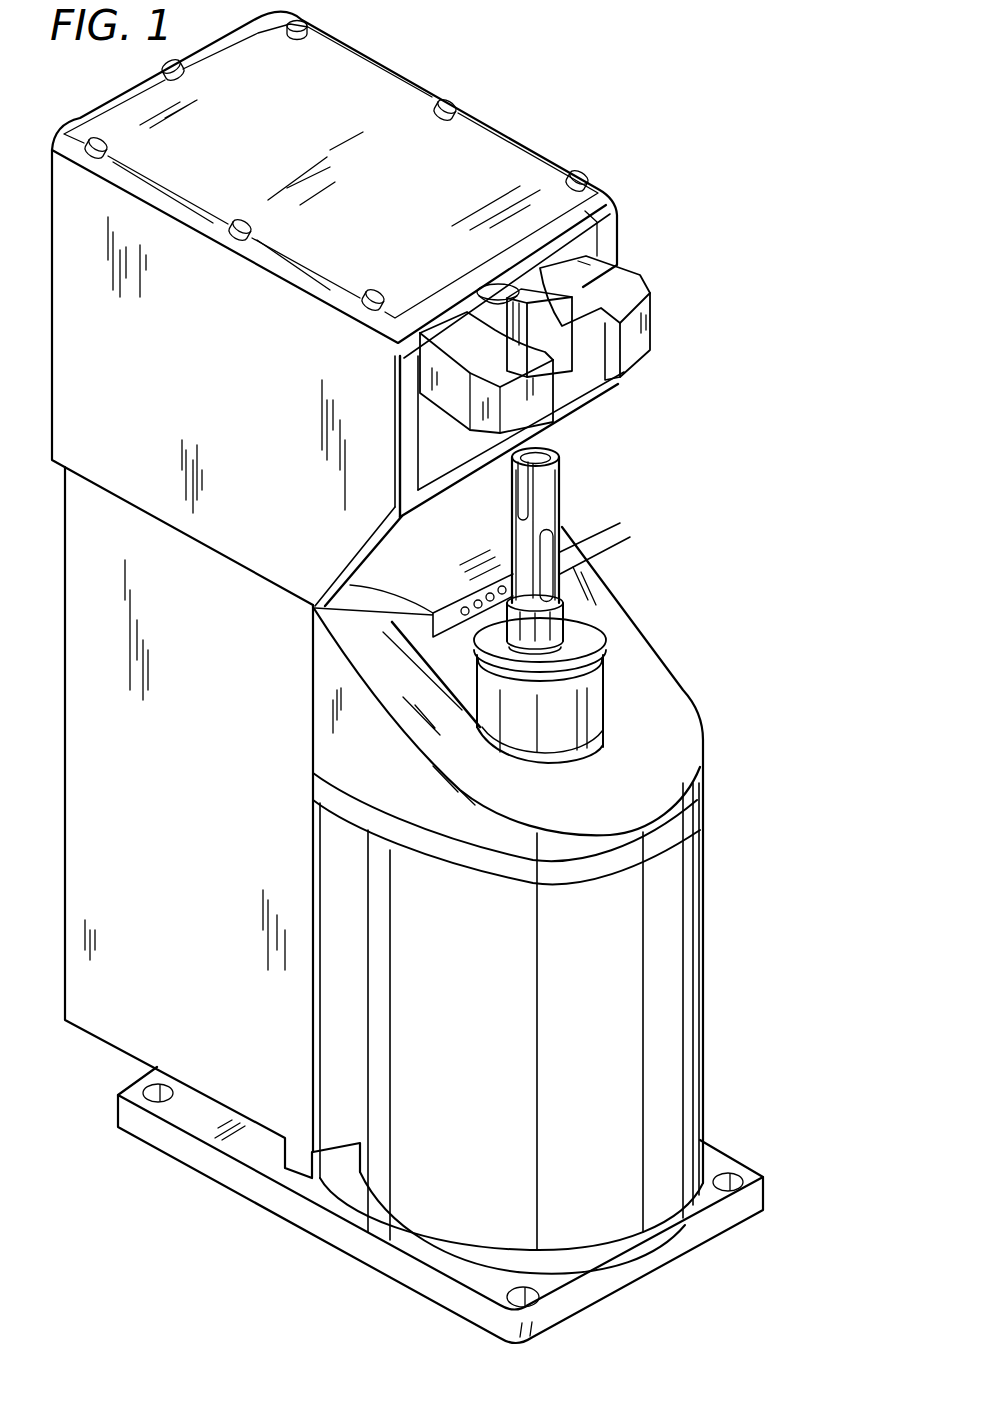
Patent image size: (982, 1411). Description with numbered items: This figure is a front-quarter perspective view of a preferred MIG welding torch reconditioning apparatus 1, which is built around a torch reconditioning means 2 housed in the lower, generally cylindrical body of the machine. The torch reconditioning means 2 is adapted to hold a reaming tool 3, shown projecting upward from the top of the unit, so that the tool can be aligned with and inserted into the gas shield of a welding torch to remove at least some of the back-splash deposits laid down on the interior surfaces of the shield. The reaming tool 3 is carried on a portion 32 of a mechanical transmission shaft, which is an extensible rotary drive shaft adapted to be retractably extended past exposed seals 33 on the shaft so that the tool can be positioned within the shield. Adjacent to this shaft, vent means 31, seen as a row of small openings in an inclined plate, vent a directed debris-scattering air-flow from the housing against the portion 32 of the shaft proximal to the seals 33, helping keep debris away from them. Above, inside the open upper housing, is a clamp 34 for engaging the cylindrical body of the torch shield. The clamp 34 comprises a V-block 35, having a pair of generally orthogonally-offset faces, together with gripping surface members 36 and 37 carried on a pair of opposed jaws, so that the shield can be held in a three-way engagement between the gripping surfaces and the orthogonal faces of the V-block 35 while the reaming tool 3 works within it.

The MIG welding torch reconditioning apparatus 1 is at (770, 262).
The torch reconditioning means 2 is at (622, 532).
The reaming tool 3 is at (549, 497).
The vent means 31 is at (473, 592).
The portion of the mechanical transmission shaft 32 is at (490, 634).
The exposed seals 33 is at (590, 650).
The clamp 34 is at (643, 266).
The V-block 35 is at (557, 338).
The gripping surface member 36 is at (483, 362).
The gripping surface member 37 is at (632, 302).